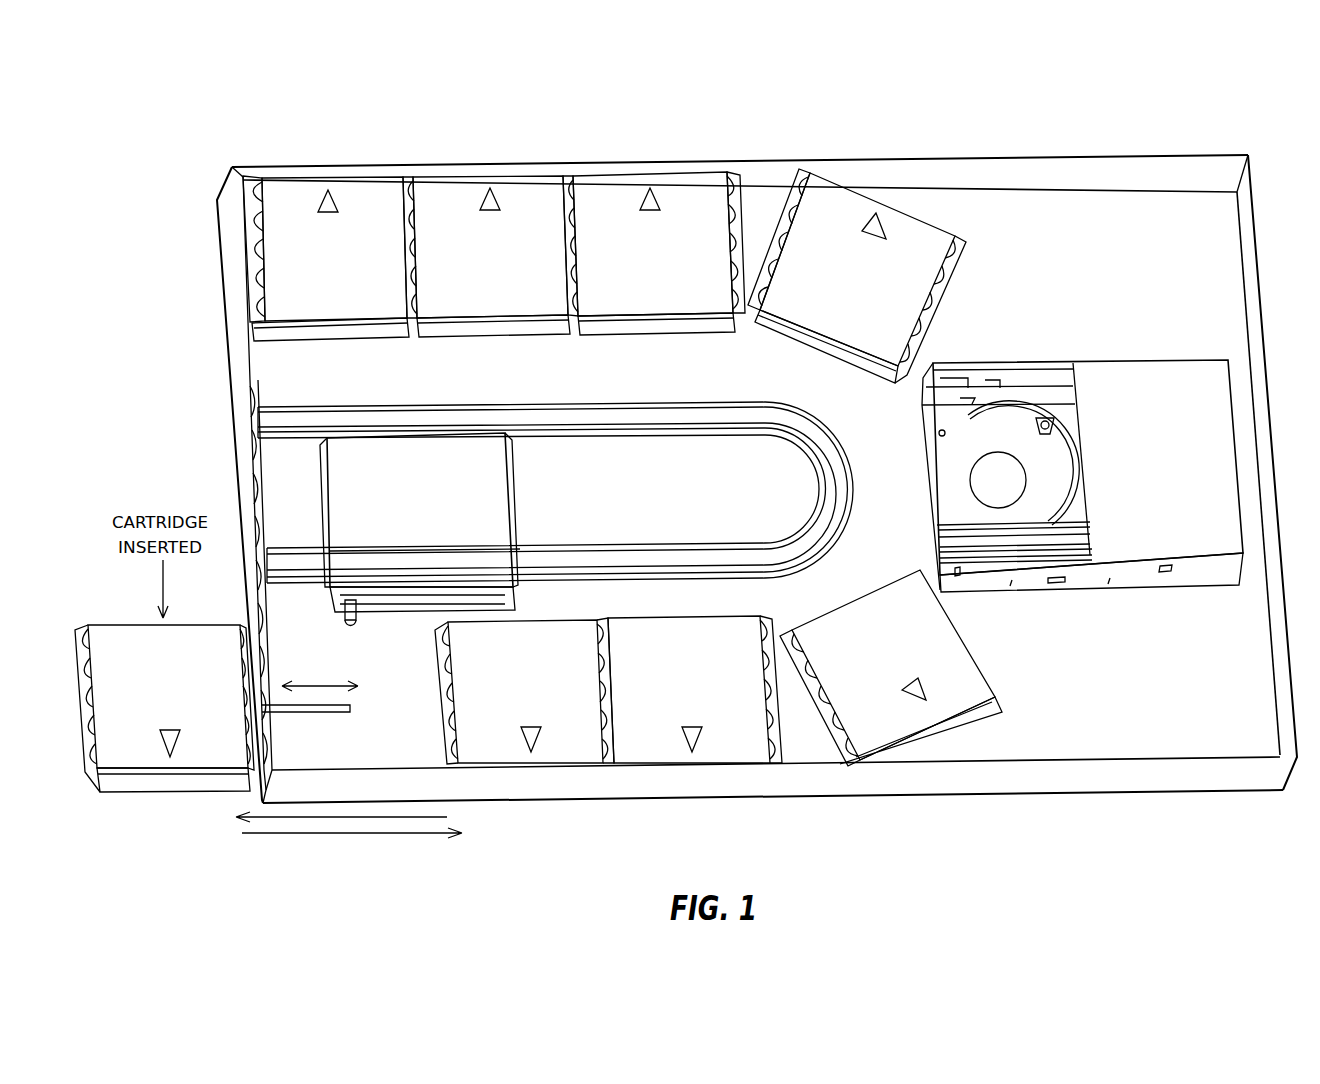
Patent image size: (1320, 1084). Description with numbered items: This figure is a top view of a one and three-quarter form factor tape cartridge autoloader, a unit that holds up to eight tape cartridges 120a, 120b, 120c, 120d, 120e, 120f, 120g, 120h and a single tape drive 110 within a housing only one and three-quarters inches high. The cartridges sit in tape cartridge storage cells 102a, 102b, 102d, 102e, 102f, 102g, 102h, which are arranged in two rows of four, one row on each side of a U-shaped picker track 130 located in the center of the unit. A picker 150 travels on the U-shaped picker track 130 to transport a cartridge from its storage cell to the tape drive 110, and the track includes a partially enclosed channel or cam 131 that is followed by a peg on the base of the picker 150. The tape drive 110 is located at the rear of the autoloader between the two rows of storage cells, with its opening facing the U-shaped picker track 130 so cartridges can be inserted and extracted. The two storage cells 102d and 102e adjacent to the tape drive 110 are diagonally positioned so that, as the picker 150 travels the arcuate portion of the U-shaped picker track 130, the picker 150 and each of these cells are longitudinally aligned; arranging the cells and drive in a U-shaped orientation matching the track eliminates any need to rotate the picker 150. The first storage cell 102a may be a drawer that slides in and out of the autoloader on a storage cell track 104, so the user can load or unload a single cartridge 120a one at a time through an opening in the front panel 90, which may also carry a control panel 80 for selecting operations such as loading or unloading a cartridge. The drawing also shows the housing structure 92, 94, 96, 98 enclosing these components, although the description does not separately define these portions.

The control panel 80 is at (247, 466).
The front panel 90 is at (228, 250).
The floor of housing 92 is at (1195, 238).
The right side wall 94 is at (1278, 442).
The front wall 96 is at (843, 778).
The rear wall 98 is at (903, 170).
The first tape cartridge storage cell 102a is at (155, 783).
The tape cartridge storage cell 102b is at (491, 691).
The tape cartridge storage cell 102d is at (970, 722).
The tape cartridge storage cell 102e is at (930, 330).
The tape cartridge storage cell 102f is at (740, 332).
The tape cartridge storage cell 102g is at (550, 170).
The tape cartridge storage cell 102h is at (255, 342).
The storage cell track 104 is at (349, 759).
The tape drive 110 is at (1158, 437).
The tape cartridge 120a is at (226, 655).
The tape cartridge 120b is at (545, 653).
The tape cartridge 120c is at (701, 651).
The tape cartridge 120d is at (906, 647).
The tape cartridge 120e is at (852, 275).
The tape cartridge 120f is at (672, 247).
The tape cartridge 120g is at (514, 247).
The tape cartridge 120h is at (355, 248).
The U-shaped picker track 130 is at (822, 487).
The cam 131 is at (690, 556).
The picker 150 is at (480, 483).